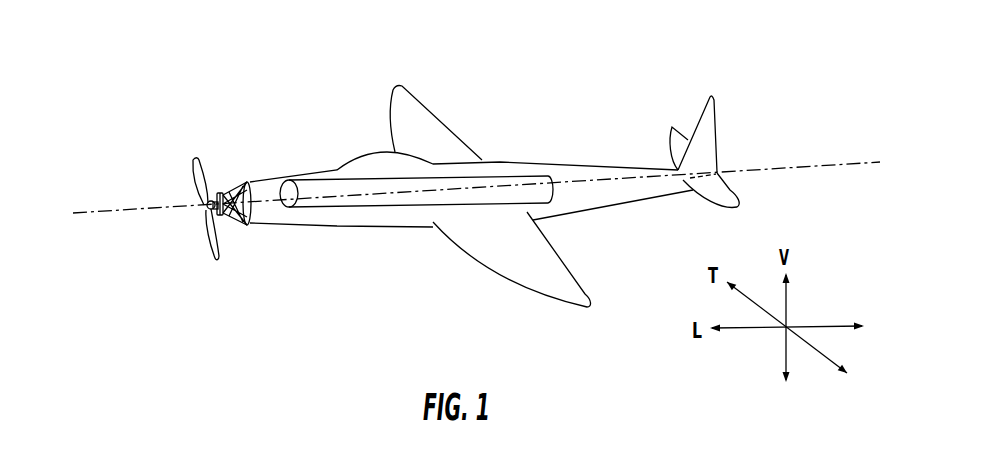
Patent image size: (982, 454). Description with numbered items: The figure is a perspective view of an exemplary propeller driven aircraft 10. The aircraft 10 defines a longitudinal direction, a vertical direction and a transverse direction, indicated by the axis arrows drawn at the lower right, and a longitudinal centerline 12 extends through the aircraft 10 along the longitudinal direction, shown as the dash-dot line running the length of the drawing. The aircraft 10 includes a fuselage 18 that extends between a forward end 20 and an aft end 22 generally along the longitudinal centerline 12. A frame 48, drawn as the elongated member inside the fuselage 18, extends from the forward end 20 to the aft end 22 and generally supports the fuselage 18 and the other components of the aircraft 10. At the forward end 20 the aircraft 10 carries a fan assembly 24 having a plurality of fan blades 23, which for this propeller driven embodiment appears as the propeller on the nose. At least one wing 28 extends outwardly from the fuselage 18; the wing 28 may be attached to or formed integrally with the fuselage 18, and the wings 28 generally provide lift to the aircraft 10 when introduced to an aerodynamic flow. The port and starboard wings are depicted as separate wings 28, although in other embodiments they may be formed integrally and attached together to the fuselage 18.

The aircraft 10 is at (172, 71).
The longitudinal centerline 12 is at (90, 212).
The fuselage 18 is at (327, 230).
The forward end 20 is at (235, 158).
The aft end 22 is at (653, 84).
The fan blades 23 is at (202, 238).
The fan assembly 24 is at (160, 181).
The wing 28 is at (432, 117).
The frame 48 is at (373, 197).